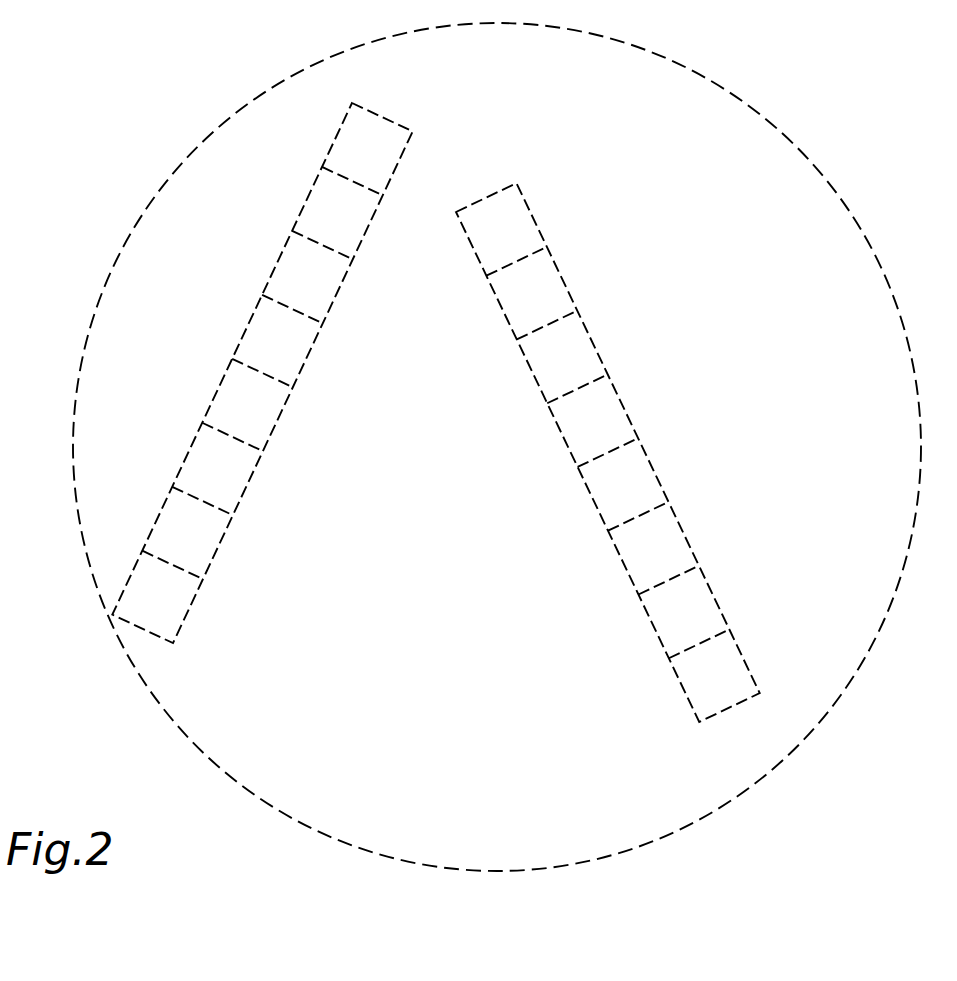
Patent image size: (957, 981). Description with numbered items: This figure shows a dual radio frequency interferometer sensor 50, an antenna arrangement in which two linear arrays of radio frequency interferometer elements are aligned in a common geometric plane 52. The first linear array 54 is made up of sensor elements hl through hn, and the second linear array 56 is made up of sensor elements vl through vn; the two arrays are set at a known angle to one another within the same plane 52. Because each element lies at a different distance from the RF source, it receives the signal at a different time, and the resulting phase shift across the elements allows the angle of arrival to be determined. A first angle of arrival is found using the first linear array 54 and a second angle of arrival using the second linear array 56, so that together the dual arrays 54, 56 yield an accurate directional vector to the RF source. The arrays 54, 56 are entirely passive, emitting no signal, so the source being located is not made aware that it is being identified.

The dual radio frequency interferometer sensor 50 is at (861, 815).
The geometric plane 52 is at (812, 733).
The first linear array 54 is at (215, 553).
The second linear array 56 is at (683, 533).